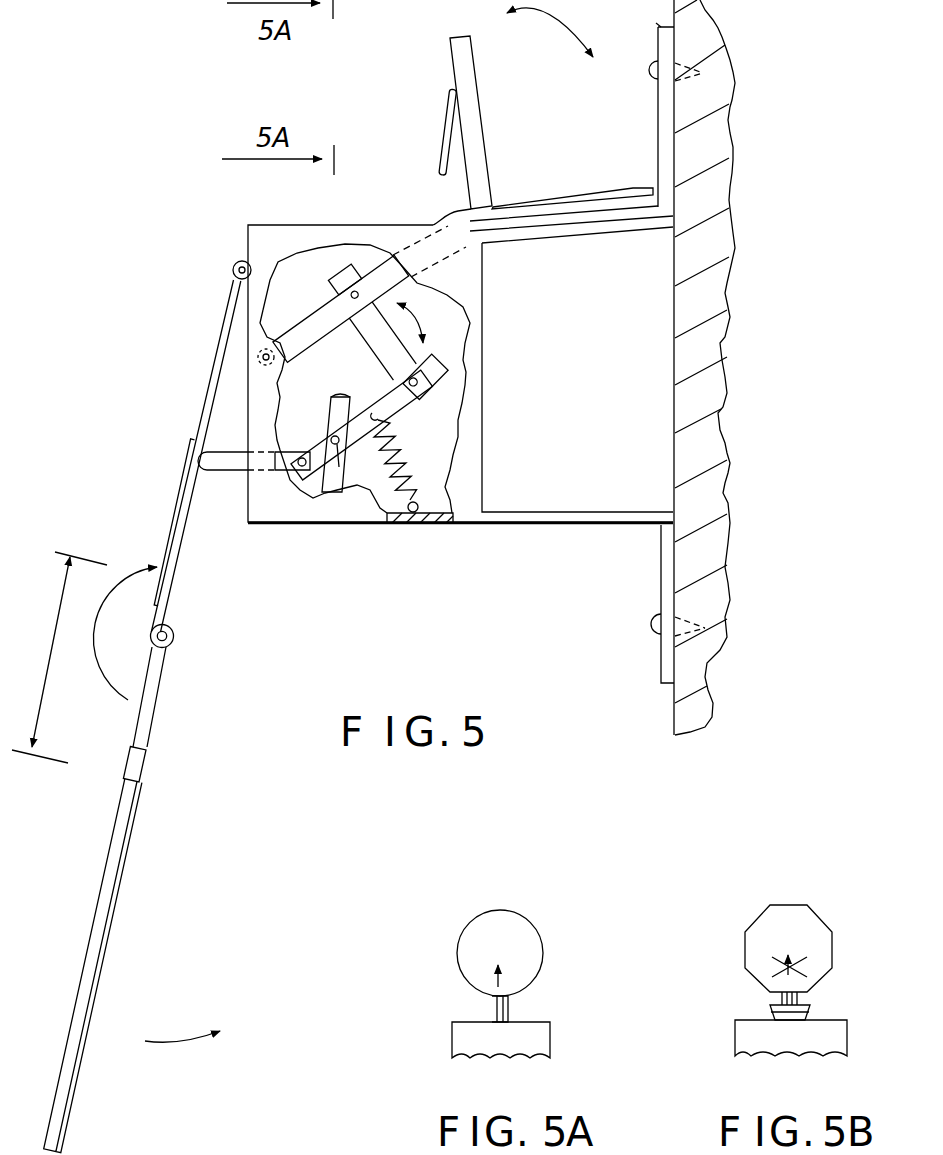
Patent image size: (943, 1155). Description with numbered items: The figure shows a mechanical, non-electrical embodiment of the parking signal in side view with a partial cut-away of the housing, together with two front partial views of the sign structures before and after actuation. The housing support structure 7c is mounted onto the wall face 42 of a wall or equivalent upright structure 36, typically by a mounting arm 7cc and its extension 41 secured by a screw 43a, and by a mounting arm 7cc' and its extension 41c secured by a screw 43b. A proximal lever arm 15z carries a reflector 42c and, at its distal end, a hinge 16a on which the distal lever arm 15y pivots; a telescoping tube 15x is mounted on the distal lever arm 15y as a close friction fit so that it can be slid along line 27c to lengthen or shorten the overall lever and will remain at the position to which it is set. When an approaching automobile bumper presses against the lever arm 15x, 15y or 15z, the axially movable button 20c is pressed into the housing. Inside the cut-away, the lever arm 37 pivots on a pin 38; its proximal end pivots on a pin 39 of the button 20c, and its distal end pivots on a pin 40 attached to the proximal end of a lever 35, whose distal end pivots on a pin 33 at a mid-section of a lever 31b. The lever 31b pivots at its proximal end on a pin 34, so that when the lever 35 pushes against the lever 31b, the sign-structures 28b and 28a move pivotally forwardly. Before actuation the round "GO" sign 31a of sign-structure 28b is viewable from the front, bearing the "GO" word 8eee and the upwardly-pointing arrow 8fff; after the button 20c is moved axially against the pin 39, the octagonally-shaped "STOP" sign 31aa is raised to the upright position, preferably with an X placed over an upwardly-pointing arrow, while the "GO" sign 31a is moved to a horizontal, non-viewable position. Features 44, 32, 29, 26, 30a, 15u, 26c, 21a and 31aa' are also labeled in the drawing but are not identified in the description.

In FIG. 5, the wall or equivalent upright structure 36 is at (712, 347).
In FIG. 5, the extension 41 is at (660, 120).
In FIG. 5, the wall face 42 is at (660, 24).
In FIG. 5, the screw 43a is at (653, 78).
In FIG. 5, the screw 43b is at (656, 635).
In FIG. 5, the extension 41c is at (661, 565).
In FIG. 5, the sign-structure 28b is at (472, 90).
In FIG. 5, the GO sign 31a is at (455, 95).
In FIG. 5A, the GO sign 31a is at (458, 955).
In FIG. 5, the swing direction arrow 44 is at (550, 30).
In FIG. 5, the STOP sign 31aa is at (572, 183).
In FIG. 5B, the STOP sign 31aa is at (779, 930).
In FIG. 5B, the stop sign arrow symbol 31aa' is at (737, 961).
In FIG. 5, the sign-structure 28a is at (628, 218).
In FIG. 5, the mounting arm 7cc is at (506, 241).
In FIG. 5, the mounting arm 7cc' is at (577, 370).
In FIG. 5, the housing support structure 7c is at (248, 507).
In FIG. 5A, the housing support structure 7c is at (465, 1040).
In FIG. 5B, the housing support structure 7c is at (742, 1037).
In FIG. 5, the lever 31b is at (403, 283).
In FIG. 5, the pin 34 is at (259, 357).
In FIG. 5, the pin 33 is at (350, 297).
In FIG. 5, the lever 35 is at (377, 336).
In FIG. 5, the lever arm 37 is at (388, 392).
In FIG. 5, the pin 40 is at (422, 378).
In FIG. 5, the rotation arrow 32 is at (430, 323).
In FIG. 5, the pin 39 is at (300, 470).
In FIG. 5, the axially movable button 20c is at (216, 451).
In FIG. 5, the pin 38 is at (341, 448).
In FIG. 5, the pawl 29 is at (330, 488).
In FIG. 5, the return spring 26 is at (398, 460).
In FIG. 5, the arm pivot 30a is at (233, 262).
In FIG. 5, the proximal lever arm 15z is at (172, 596).
In FIG. 5, the reflector 42c is at (190, 483).
In FIG. 5, the hinge 16a is at (174, 637).
In FIG. 5, the distal lever arm 15y is at (159, 684).
In FIG. 5, the arm collar 15u is at (147, 750).
In FIG. 5, the telescoping distal-end tube 15x is at (122, 862).
In FIG. 5, the arm swing arrow 26c is at (170, 1040).
In FIG. 5, the line 27c is at (50, 637).
In FIG. 5, the arm rotation arc 21a is at (100, 672).
In FIG. 5A, the GO word 8eee is at (502, 923).
In FIG. 5A, the upwardly-pointing arrow 8fff is at (493, 977).